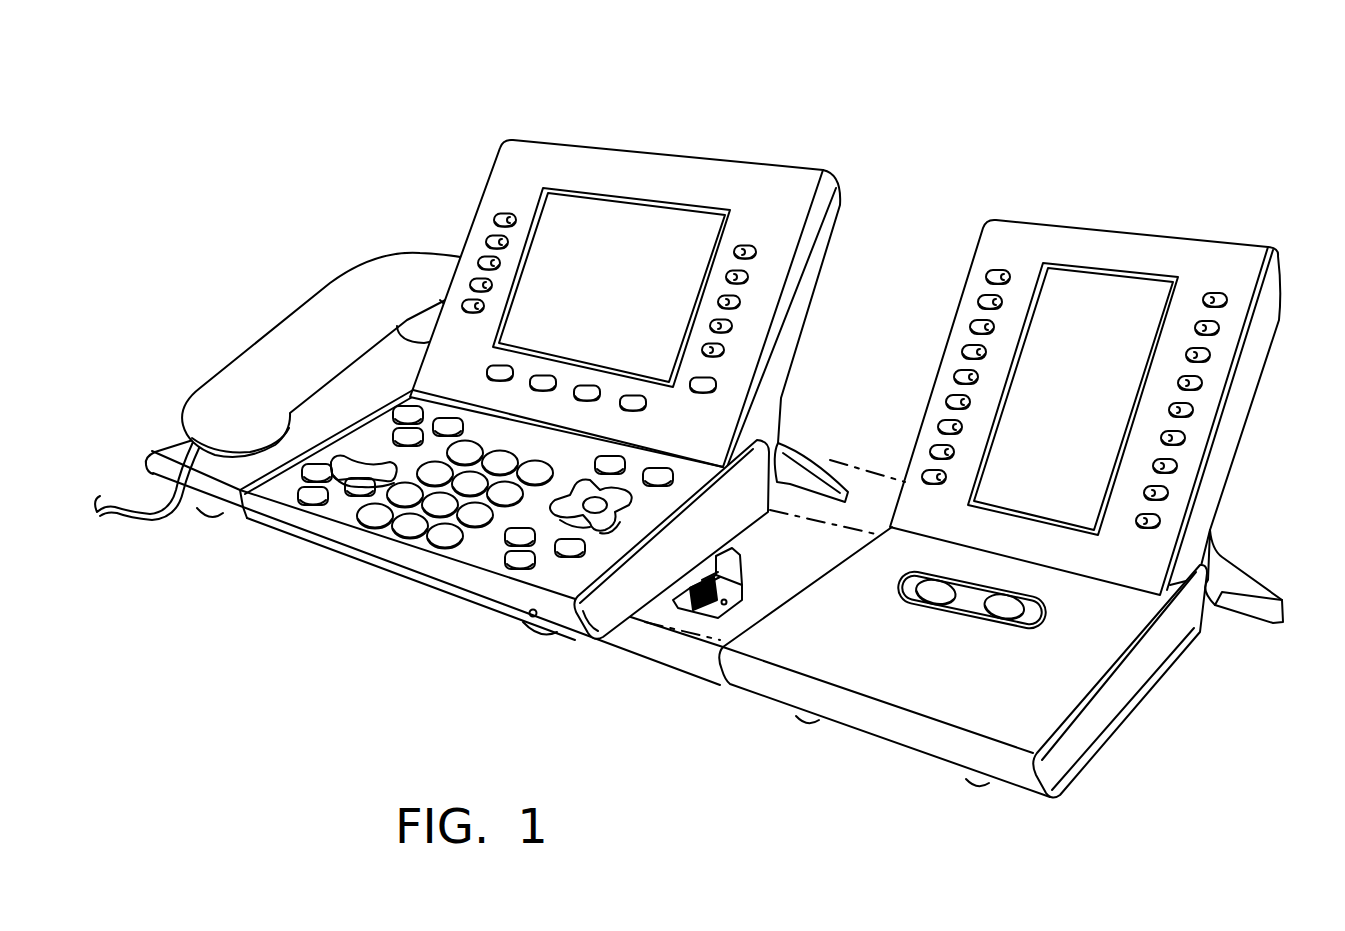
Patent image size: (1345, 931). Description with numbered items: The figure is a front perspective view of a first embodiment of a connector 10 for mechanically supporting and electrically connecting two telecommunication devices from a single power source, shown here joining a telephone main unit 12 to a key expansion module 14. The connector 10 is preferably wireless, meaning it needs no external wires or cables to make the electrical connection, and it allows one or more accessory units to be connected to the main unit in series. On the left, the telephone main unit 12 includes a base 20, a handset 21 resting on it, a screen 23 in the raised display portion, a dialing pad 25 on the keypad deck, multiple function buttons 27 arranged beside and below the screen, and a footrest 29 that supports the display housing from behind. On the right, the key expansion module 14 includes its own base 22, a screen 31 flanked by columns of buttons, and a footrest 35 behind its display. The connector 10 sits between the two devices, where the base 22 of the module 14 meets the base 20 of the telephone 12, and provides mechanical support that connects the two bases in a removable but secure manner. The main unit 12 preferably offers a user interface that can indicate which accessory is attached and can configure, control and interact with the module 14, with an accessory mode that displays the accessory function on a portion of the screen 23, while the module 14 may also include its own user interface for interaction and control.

The connector 10 is at (675, 640).
The telephone main unit 12 is at (496, 365).
The key expansion module 14 is at (1024, 483).
The base 20 is at (287, 517).
The handset 21 is at (237, 375).
The base 22 is at (1065, 755).
The screen 23 is at (637, 217).
The dialing pad 25 is at (392, 552).
The function buttons 27 is at (407, 408).
The footrest 29 is at (803, 450).
The screen 31 is at (1108, 292).
The footrest 35 is at (1245, 577).